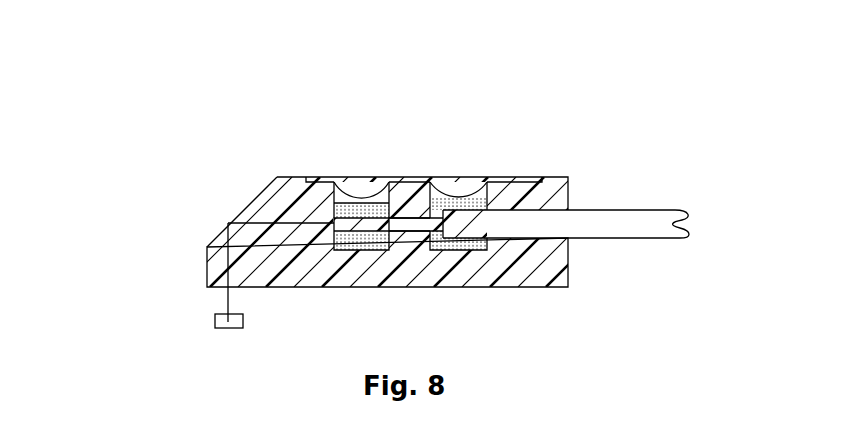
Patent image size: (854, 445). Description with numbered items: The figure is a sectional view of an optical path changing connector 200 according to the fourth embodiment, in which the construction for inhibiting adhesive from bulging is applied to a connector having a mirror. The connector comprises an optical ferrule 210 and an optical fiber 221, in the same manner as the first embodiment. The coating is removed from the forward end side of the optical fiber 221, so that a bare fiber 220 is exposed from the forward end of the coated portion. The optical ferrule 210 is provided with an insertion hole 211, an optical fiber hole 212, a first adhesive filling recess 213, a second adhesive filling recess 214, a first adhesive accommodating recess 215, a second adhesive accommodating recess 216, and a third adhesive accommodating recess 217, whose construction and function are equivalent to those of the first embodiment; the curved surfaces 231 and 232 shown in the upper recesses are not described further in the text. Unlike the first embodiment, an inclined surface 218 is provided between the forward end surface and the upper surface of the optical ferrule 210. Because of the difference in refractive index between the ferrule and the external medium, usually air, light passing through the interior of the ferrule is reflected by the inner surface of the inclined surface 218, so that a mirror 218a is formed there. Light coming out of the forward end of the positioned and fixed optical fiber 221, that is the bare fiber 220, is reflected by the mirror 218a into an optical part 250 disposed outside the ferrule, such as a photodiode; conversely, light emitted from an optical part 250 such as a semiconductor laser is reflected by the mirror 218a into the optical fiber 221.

The optical path changing connector 200 is at (617, 164).
The optical ferrule 210 is at (220, 190).
The insertion hole 211 is at (542, 210).
The optical fiber hole 212 is at (408, 218).
The first adhesive filling recess 213 is at (366, 248).
The second adhesive filling recess 214 is at (446, 248).
The first adhesive accommodating recess 215 is at (317, 177).
The second adhesive accommodating recess 216 is at (518, 186).
The third adhesive accommodating recess 217 is at (410, 178).
The inclined surface 218 is at (252, 197).
The mirror 218a is at (226, 223).
The bare fiber 220 is at (423, 224).
The optical fiber 221 is at (605, 223).
The first concave surface 231 is at (361, 195).
The second concave surface 232 is at (457, 194).
The optical part 250 is at (228, 322).